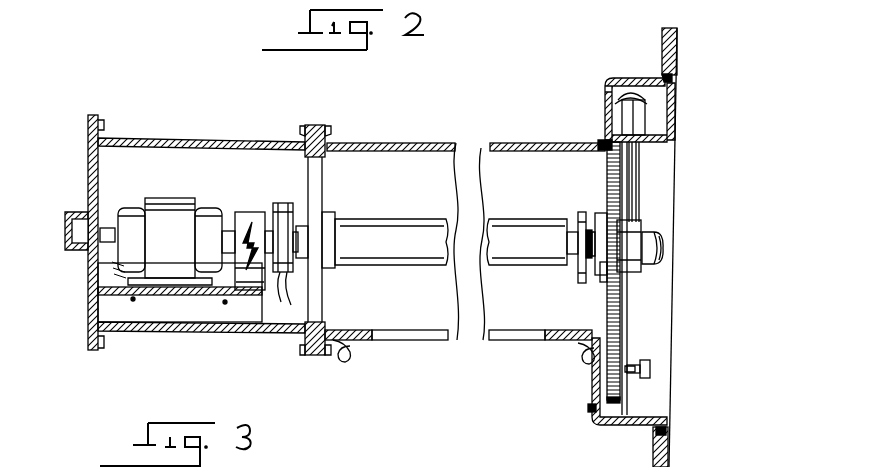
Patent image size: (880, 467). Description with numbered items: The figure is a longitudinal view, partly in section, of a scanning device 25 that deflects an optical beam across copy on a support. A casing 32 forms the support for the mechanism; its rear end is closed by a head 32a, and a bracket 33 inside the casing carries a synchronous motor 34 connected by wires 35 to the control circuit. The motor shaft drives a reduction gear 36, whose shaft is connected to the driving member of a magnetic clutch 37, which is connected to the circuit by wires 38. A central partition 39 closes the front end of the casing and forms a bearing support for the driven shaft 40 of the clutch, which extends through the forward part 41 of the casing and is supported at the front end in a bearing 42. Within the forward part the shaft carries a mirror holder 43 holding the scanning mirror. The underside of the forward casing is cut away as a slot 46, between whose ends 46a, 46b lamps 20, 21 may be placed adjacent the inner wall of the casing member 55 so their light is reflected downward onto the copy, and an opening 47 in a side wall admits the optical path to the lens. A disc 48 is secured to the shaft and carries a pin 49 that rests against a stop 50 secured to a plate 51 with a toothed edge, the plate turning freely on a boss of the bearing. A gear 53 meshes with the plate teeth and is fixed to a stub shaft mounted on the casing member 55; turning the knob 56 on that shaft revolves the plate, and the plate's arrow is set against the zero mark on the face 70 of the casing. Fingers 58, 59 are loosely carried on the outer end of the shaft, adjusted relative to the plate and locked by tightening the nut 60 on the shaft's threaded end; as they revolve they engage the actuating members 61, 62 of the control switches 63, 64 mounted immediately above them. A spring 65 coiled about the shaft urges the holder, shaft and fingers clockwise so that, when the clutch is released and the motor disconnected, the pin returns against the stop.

The lamp 20 is at (346, 354).
The lamp 21 is at (583, 358).
The scanning device 25 is at (345, 380).
The casing 32 is at (228, 140).
The head 32a is at (86, 193).
The bracket 33 is at (165, 300).
The synchronous motor 34 is at (162, 200).
The wires 35 is at (104, 245).
The reduction gear 36 is at (248, 212).
The magnetic clutch 37 is at (283, 203).
The wires 38 is at (292, 297).
The central partition 39 is at (314, 125).
The driven shaft 40 is at (300, 226).
The forward part of the casing 41 is at (491, 150).
The bearing 42 is at (603, 282).
The mirror holder 43 is at (413, 219).
The cut-away slot 46 is at (440, 340).
The end of slot 46a is at (576, 343).
The end of slot 46b is at (375, 339).
The opening 47 is at (450, 240).
The disc 48 is at (578, 228).
The pin 49 is at (598, 215).
The stop 50 is at (606, 198).
The plate 51 is at (625, 330).
The gear 53 is at (633, 380).
The casing member 55 is at (588, 409).
The knob 56 is at (646, 362).
The finger 58 is at (641, 196).
The finger 59 is at (641, 216).
The nut 60 is at (656, 265).
The actuating member 61 is at (641, 160).
The actuating member 62 is at (633, 175).
The control switch 63 is at (648, 116).
The control switch 64 is at (621, 104).
The spring 65 is at (591, 272).
The face of the casing 70 is at (600, 146).